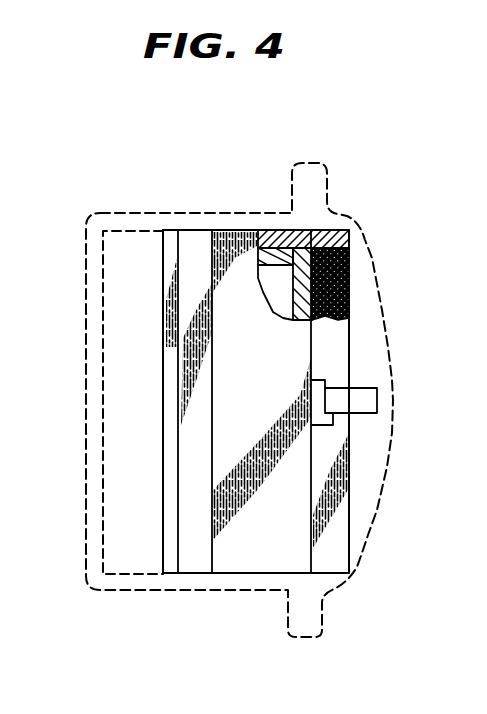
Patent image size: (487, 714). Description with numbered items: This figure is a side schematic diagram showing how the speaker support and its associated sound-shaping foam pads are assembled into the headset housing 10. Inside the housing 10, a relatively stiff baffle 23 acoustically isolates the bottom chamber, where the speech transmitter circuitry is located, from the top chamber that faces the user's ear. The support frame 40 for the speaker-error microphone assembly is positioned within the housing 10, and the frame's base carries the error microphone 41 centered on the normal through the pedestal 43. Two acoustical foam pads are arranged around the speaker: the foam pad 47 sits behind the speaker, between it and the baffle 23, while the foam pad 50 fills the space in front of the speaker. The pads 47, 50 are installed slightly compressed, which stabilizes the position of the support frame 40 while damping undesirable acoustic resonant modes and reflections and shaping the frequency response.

The housing 10 is at (139, 591).
The baffle 23 is at (172, 236).
The foam pad 47 is at (193, 236).
The support frame 40 is at (298, 231).
The foam pad 50 is at (349, 284).
The error microphone 41 is at (363, 398).
The pedestal 43 is at (312, 422).